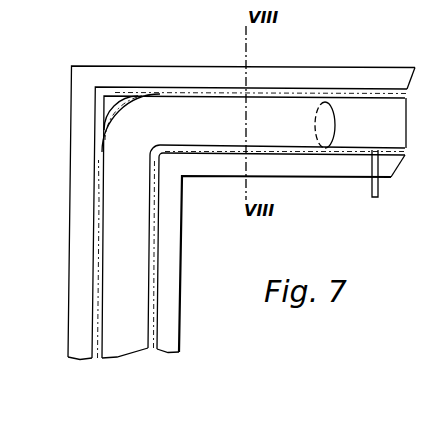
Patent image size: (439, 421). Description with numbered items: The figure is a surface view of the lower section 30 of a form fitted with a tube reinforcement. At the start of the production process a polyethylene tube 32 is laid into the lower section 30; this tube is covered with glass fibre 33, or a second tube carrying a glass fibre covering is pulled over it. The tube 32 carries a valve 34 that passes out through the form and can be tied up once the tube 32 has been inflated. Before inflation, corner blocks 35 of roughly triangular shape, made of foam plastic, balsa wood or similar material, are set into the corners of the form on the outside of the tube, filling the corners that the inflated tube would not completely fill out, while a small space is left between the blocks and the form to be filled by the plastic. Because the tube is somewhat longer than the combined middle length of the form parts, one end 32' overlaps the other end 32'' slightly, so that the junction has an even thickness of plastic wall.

The lower section 30 is at (77, 313).
The polyethylene tube 32 is at (276, 259).
The end of tube 32' is at (359, 90).
The end of tube 32'' is at (304, 90).
The glass fibre 33 is at (155, 263).
The valve 34 is at (360, 195).
The corner blocks 35 is at (115, 110).